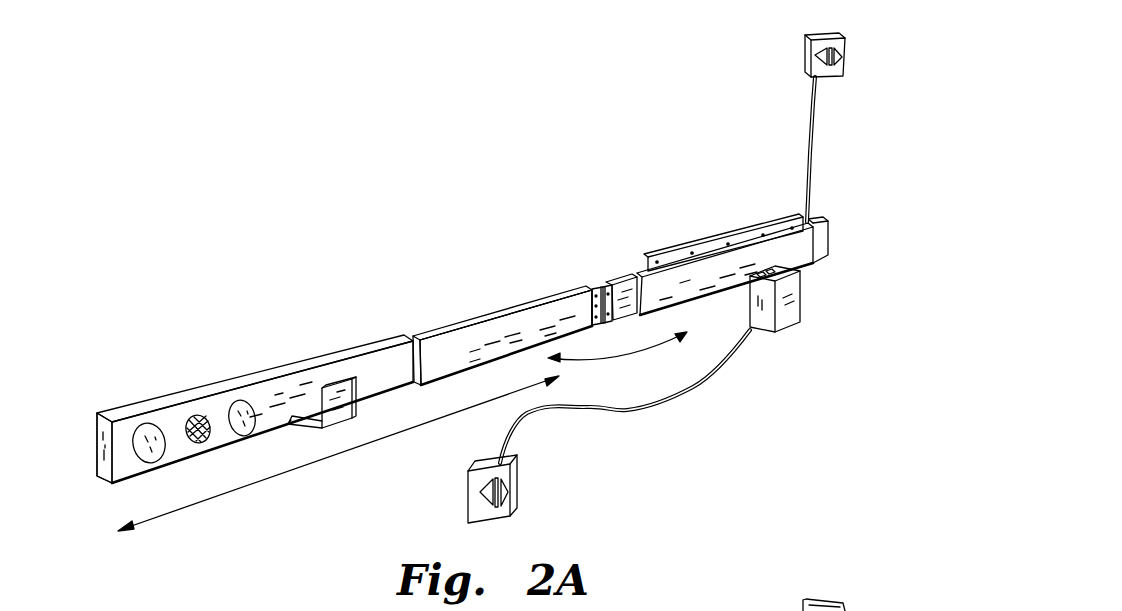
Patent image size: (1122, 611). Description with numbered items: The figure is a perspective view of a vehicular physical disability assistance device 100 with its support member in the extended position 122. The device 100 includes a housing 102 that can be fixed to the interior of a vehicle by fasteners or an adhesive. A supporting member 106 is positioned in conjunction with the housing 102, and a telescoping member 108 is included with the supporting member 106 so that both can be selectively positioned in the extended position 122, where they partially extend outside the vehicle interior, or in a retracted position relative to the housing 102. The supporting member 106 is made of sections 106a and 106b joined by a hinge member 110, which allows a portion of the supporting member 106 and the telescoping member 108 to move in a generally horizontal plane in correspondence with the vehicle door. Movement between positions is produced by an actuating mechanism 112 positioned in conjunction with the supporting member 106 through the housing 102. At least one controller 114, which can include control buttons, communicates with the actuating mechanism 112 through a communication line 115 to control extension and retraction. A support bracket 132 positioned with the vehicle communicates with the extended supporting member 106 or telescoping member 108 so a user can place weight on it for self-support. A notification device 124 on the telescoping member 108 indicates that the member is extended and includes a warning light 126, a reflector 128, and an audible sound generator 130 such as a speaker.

The vehicular physical disability assistance device 100 is at (203, 212).
The housing 102 is at (713, 240).
The supporting member 106 is at (500, 293).
The section of supporting member 106a is at (540, 293).
The section of supporting member 106b is at (615, 285).
The telescoping member 108 is at (372, 348).
The hinge member 110 is at (603, 286).
The actuating mechanism 112 is at (784, 335).
The controller 114 is at (512, 483).
The communication line 115 is at (680, 405).
The extended position 122 is at (97, 405).
The notification device 124 is at (212, 463).
The warning light 126 is at (157, 423).
The reflector 128 is at (242, 400).
The audible sound generator 130 is at (204, 415).
The support bracket 132 is at (330, 390).